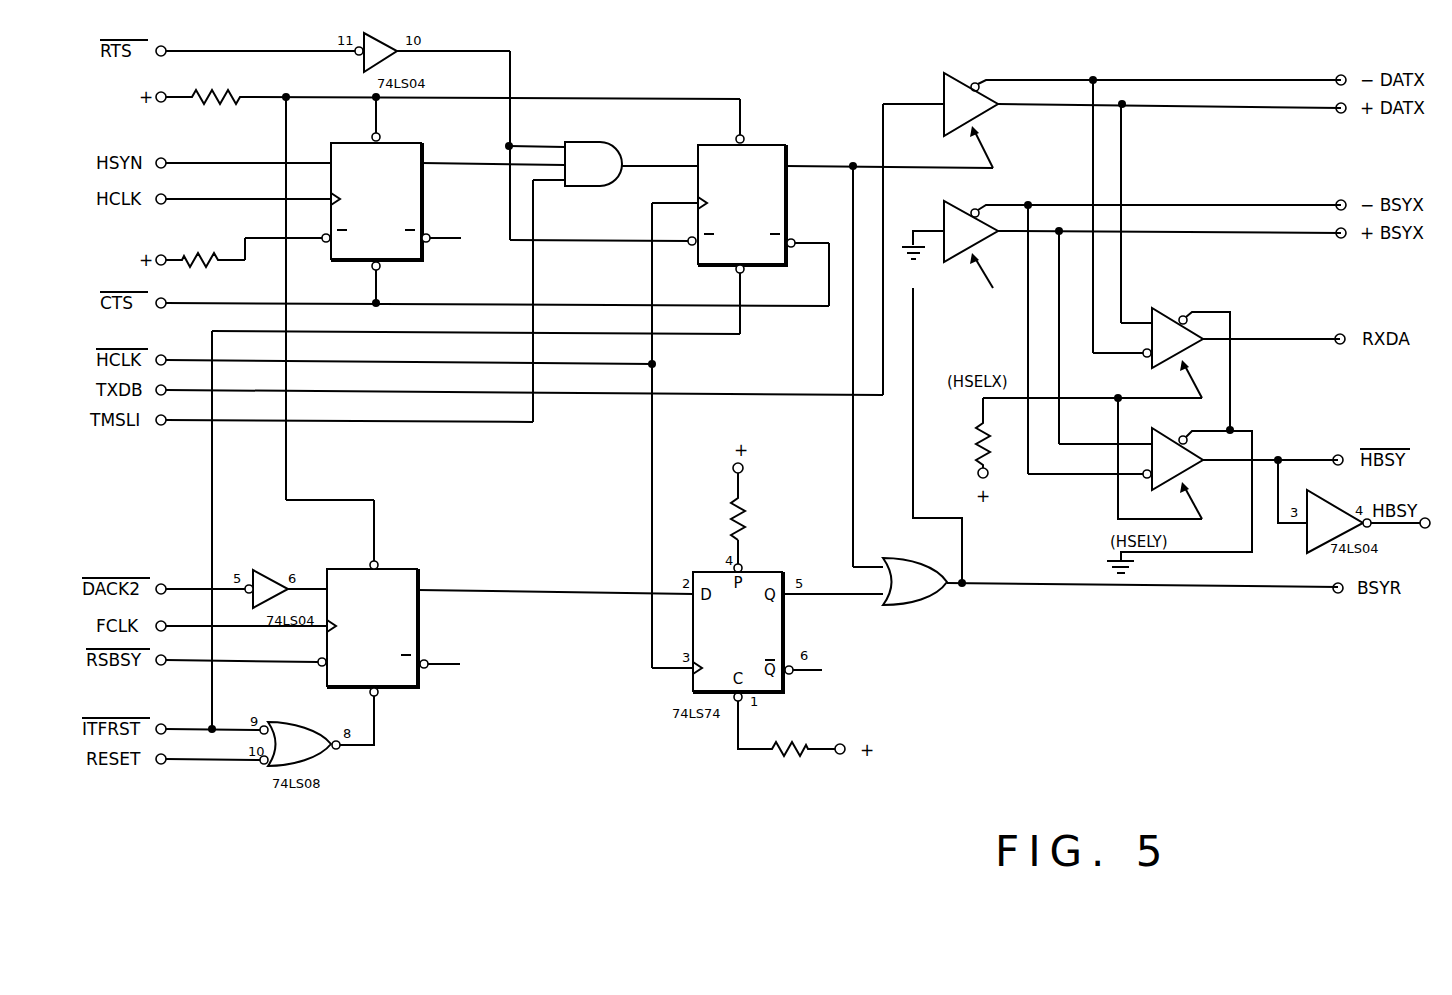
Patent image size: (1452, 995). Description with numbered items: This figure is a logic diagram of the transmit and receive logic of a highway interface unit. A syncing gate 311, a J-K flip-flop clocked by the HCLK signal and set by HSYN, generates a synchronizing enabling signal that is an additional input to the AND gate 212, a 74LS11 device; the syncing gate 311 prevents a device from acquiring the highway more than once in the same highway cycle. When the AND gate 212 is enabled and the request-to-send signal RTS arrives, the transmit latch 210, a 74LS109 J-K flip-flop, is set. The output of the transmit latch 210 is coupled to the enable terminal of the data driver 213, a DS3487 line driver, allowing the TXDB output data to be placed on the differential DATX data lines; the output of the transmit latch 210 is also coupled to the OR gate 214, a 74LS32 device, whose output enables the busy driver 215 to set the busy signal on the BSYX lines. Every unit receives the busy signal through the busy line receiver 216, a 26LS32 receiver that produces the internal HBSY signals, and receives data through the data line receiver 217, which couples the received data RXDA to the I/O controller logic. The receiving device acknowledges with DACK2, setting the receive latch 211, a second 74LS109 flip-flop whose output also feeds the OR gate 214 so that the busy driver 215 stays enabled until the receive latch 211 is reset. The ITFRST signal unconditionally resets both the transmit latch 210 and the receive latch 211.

The transmit latch 210 is at (751, 144).
The receive latch 211 is at (399, 693).
The AND gate 212 is at (600, 141).
The data driver 213 is at (940, 75).
The OR gate 214 is at (945, 590).
The busy driver 215 is at (940, 205).
The busy line receiver 216 is at (1195, 468).
The data line receiver 217 is at (1160, 310).
The syncing gate 311 is at (425, 205).